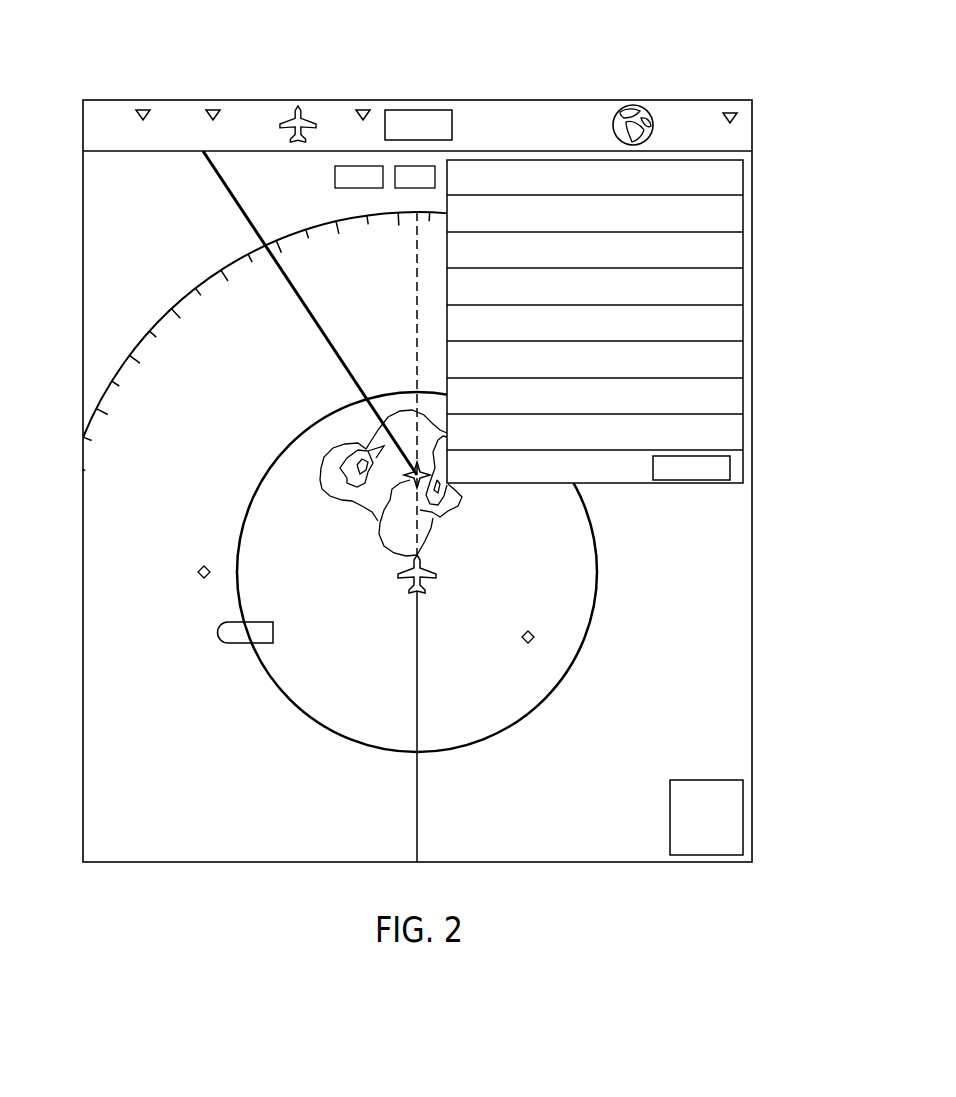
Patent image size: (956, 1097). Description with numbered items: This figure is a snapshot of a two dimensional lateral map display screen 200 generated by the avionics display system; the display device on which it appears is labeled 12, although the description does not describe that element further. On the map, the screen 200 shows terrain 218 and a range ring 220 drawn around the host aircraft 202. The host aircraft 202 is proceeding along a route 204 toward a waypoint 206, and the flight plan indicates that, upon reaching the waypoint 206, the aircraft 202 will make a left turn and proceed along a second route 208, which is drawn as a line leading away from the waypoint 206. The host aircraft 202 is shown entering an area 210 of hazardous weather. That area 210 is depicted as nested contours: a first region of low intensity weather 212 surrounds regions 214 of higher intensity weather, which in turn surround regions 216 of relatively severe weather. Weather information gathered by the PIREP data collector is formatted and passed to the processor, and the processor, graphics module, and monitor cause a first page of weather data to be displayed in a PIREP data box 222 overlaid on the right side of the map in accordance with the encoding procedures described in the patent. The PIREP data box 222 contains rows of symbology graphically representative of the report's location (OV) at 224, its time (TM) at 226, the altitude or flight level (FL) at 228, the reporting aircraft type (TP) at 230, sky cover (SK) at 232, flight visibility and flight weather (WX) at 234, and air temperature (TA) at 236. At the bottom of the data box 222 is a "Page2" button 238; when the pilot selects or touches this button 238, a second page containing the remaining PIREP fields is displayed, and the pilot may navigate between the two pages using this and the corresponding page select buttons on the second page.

The lateral map display screen 200 is at (590, 78).
The display device 12 is at (751, 491).
The host aircraft 202 is at (400, 580).
The route 204 is at (438, 517).
The waypoint 206 is at (383, 515).
The route 208 is at (326, 343).
The area of hazardous weather 210 is at (380, 544).
The first region of low intensity weather 212 is at (428, 536).
The regions of higher intensity weather 214 is at (322, 495).
The regions of relatively severe weather 216 is at (368, 447).
The terrain 218 is at (196, 835).
The range ring 220 is at (590, 632).
The PIREP data box 222 is at (743, 178).
The location (OV) symbology 224 is at (743, 212).
The time (TM) symbology 226 is at (743, 249).
The altitude/flight level (FL) symbology 228 is at (743, 286).
The aircraft type (TP) symbology 230 is at (743, 322).
The sky cover (SK) symbology 232 is at (743, 359).
The flight visibility and flight weather (WX) symbology 234 is at (743, 395).
The air temperature (TA) symbology 236 is at (743, 432).
The "Page2" button 238 is at (730, 468).